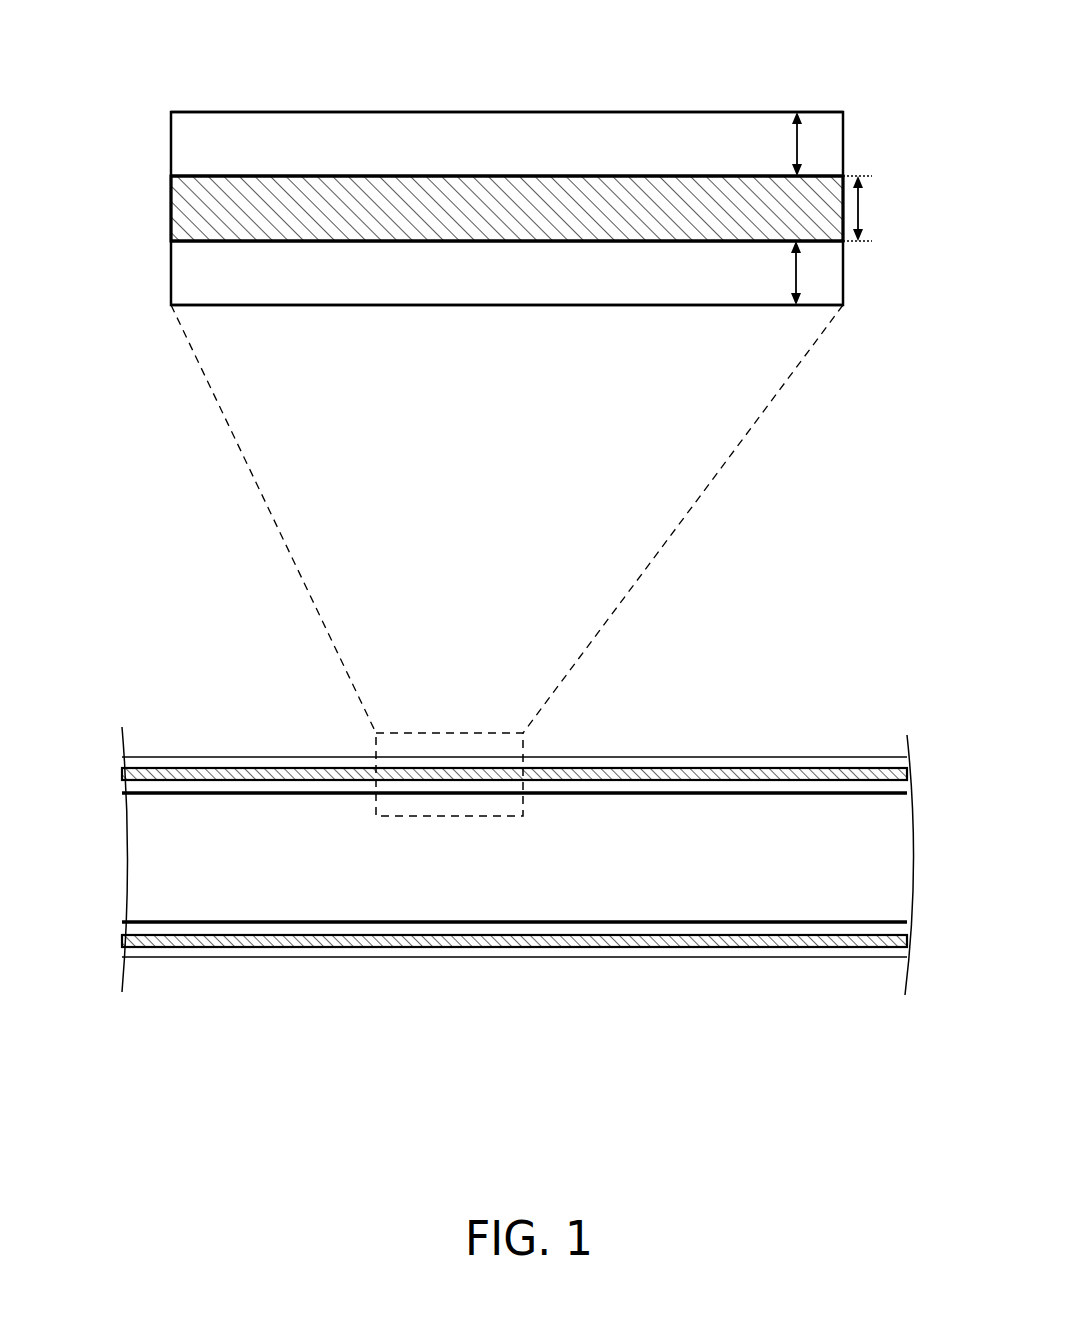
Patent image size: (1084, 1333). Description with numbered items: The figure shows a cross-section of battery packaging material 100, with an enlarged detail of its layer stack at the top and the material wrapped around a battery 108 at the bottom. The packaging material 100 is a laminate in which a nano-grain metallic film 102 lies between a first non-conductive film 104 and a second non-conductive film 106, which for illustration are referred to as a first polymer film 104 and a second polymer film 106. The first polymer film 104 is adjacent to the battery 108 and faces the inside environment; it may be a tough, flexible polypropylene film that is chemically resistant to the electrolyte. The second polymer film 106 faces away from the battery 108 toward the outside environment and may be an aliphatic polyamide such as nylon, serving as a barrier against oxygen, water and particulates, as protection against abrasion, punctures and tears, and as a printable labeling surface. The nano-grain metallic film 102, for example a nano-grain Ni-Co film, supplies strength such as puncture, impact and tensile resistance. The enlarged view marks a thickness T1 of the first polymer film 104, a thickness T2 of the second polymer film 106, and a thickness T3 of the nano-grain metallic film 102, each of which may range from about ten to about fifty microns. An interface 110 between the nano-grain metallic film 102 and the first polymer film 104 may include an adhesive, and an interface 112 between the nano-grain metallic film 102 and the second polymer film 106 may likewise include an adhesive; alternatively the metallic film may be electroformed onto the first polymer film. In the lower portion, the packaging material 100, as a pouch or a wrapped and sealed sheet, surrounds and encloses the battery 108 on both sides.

The battery packaging material 100 is at (664, 39).
The nano-grain metallic film 102 is at (171, 213).
The first non-conductive film 104 is at (240, 282).
The second non-conductive film 106 is at (240, 154).
The battery 108 is at (246, 866).
The interface 110 is at (507, 241).
The interface 112 is at (455, 176).
The thickness of first polymer film T1 is at (775, 273).
The thickness of second polymer film T2 is at (777, 144).
The thickness of nano-grain metallic film T3 is at (874, 208).